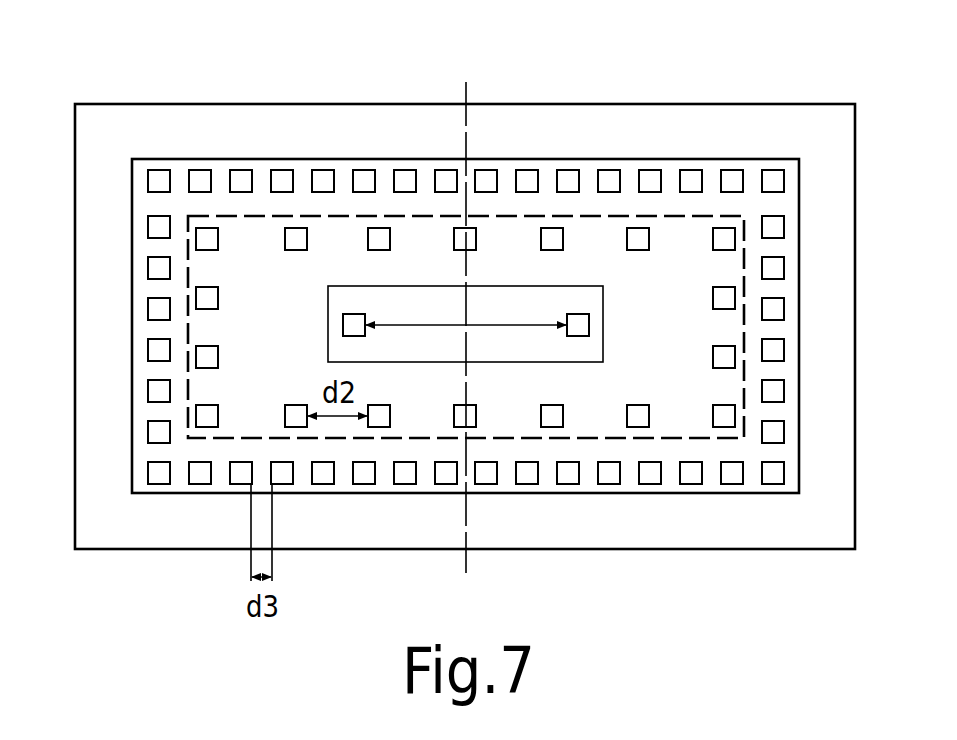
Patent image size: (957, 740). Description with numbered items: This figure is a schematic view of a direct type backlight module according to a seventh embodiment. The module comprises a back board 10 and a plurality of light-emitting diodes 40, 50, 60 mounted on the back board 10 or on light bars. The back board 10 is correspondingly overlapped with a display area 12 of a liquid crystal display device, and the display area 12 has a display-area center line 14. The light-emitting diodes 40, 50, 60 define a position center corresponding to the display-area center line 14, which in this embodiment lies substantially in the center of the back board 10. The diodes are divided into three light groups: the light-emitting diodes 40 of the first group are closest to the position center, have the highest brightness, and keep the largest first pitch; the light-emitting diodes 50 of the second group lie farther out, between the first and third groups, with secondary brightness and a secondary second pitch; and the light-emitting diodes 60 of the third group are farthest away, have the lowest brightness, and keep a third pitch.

The back board 10 is at (690, 104).
The display area 12 is at (608, 159).
The display-area center line 14 is at (466, 97).
The light-emitting diodes of the first light group 40 is at (590, 325).
The light-emitting diodes of the second light group 50 is at (735, 416).
The light-emitting diodes of the third light group 60 is at (784, 474).